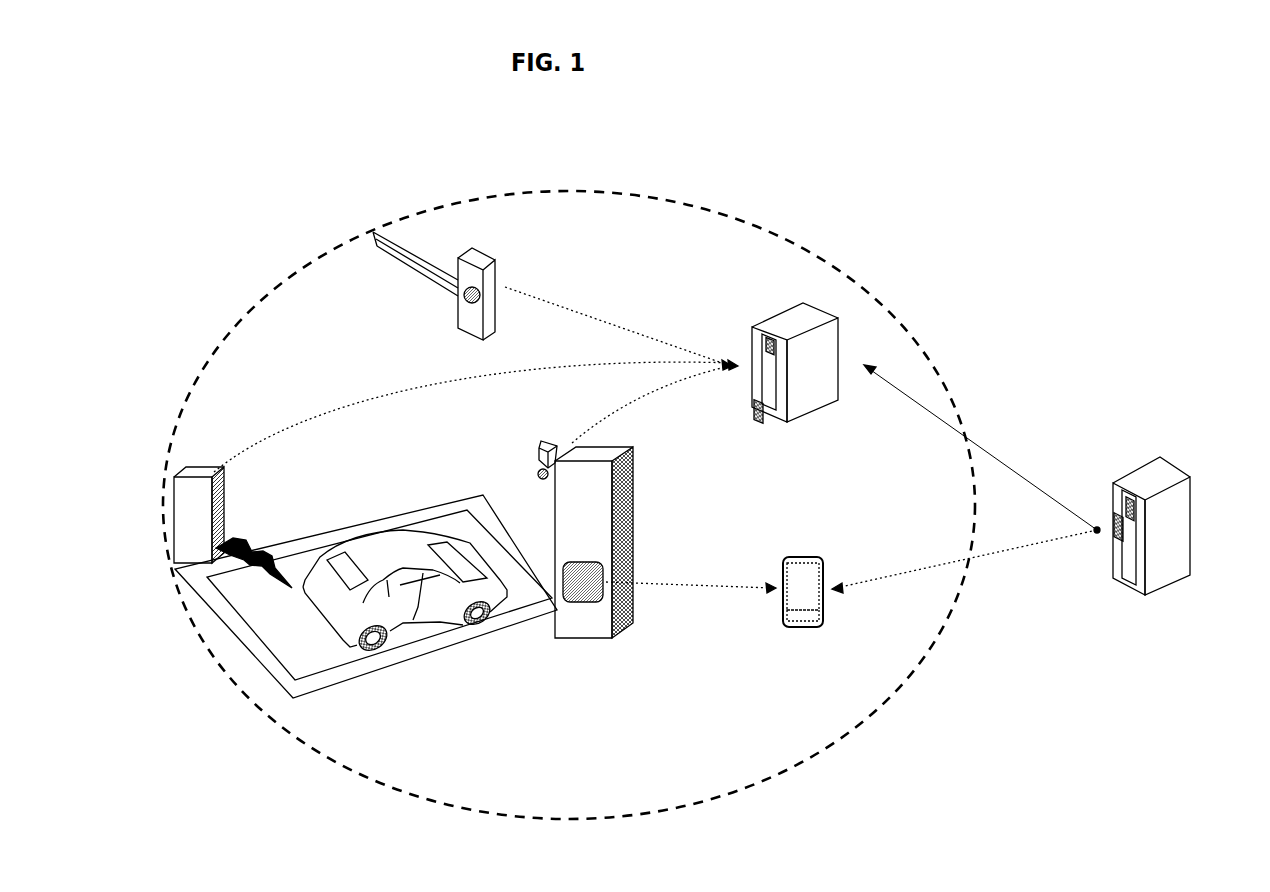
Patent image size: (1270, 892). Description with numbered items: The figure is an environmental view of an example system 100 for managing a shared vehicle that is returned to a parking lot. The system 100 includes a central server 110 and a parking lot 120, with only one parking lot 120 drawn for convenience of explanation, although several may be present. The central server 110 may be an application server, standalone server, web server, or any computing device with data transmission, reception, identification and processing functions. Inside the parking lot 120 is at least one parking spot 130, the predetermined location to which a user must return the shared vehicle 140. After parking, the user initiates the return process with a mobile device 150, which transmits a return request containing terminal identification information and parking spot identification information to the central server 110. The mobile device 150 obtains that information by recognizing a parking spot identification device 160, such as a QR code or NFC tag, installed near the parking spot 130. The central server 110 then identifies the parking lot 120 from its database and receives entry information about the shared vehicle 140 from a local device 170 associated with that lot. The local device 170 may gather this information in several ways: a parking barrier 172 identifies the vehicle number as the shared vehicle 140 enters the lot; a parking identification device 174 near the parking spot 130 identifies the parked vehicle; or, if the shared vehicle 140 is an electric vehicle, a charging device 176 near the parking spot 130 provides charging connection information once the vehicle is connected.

The system 100 is at (946, 807).
The central server 110 is at (1173, 460).
The parking lot 120 is at (573, 187).
The parking spot 130 is at (387, 672).
The shared vehicle 140 is at (383, 547).
The mobile device 150 is at (807, 630).
The parking spot identification device 160 is at (600, 600).
The local device 170 is at (820, 308).
The parking barrier 172 is at (480, 250).
The parking identification device 174 is at (540, 438).
The charging device 176 is at (208, 467).